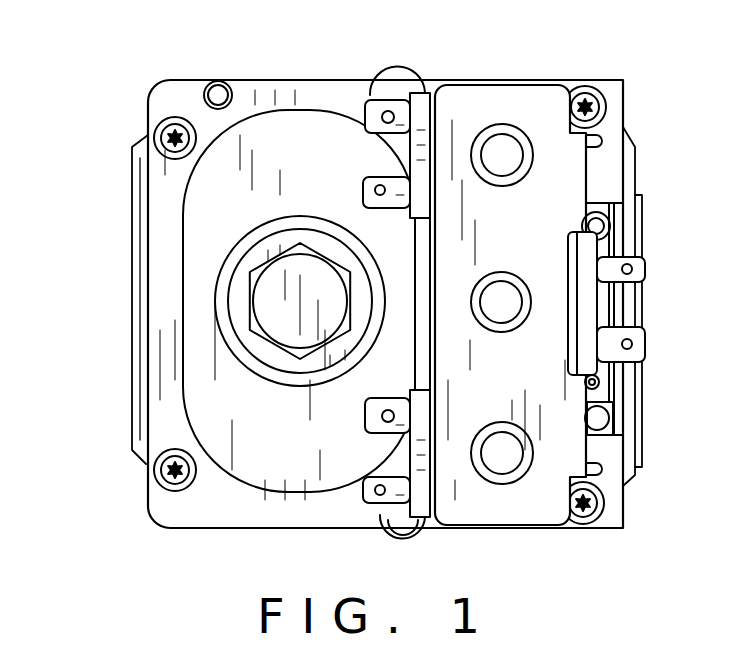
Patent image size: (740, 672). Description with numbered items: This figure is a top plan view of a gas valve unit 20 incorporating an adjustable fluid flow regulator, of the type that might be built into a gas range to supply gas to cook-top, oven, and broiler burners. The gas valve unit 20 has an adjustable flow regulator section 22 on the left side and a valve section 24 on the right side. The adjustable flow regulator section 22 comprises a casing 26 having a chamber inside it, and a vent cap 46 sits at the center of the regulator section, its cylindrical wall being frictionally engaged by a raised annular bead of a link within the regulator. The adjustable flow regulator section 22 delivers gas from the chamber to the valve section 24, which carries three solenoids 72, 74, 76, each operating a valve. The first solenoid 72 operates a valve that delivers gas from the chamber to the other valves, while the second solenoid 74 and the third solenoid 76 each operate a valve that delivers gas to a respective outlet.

The gas valve unit 20 is at (358, 294).
The adjustable flow regulator section 22 is at (303, 80).
The valve section 24 is at (498, 84).
The casing 26 is at (231, 520).
The vent cap 46 is at (268, 303).
The first solenoid 72 is at (500, 456).
The second solenoid 74 is at (521, 322).
The third solenoid 76 is at (523, 166).